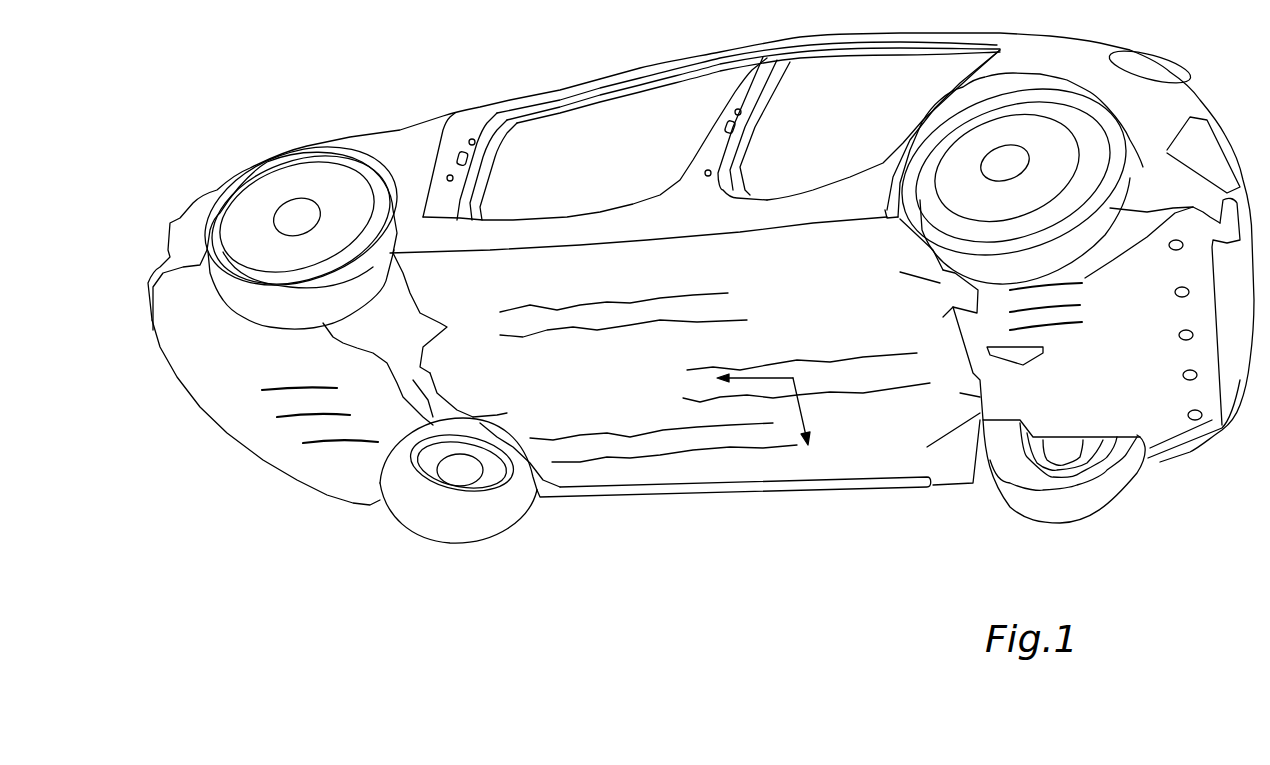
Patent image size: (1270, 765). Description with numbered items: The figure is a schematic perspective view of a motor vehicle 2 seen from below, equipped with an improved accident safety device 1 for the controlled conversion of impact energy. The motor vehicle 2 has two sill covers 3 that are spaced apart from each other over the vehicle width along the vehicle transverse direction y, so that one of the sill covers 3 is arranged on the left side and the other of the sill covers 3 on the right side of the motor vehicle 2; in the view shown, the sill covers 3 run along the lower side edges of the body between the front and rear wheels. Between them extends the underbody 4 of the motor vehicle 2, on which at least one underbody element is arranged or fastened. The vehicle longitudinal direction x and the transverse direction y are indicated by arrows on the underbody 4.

The accident safety device 1 is at (807, 218).
The motor vehicle 2 is at (262, 152).
The sill cover 3 is at (622, 247).
The underbody 4 is at (643, 395).